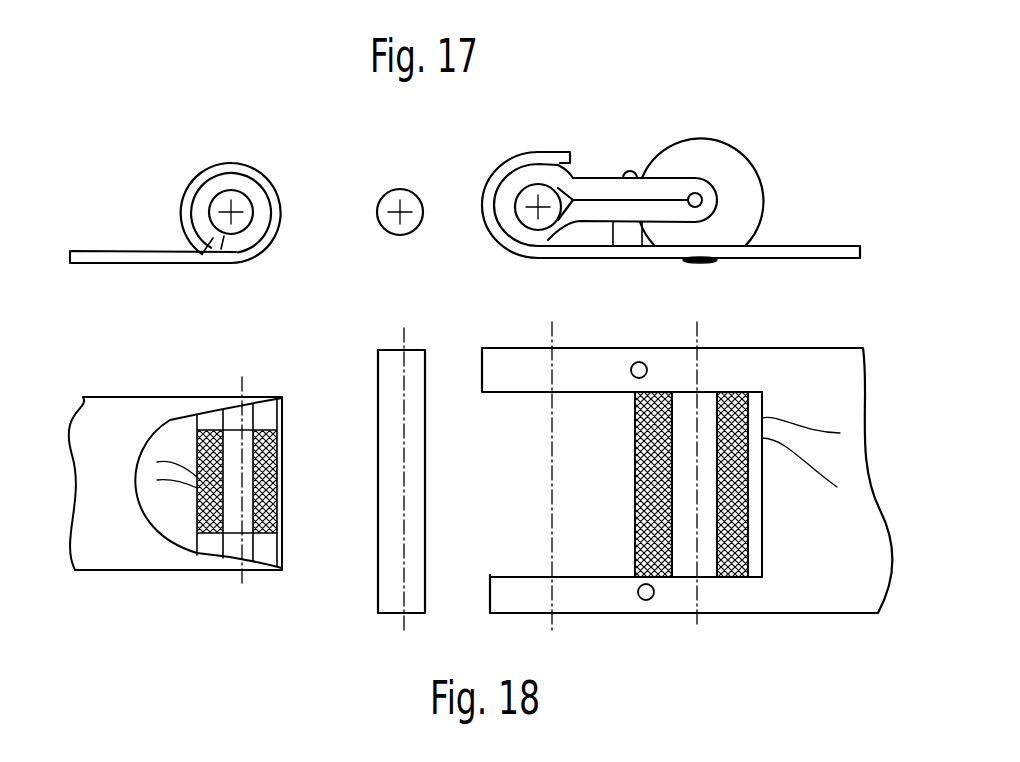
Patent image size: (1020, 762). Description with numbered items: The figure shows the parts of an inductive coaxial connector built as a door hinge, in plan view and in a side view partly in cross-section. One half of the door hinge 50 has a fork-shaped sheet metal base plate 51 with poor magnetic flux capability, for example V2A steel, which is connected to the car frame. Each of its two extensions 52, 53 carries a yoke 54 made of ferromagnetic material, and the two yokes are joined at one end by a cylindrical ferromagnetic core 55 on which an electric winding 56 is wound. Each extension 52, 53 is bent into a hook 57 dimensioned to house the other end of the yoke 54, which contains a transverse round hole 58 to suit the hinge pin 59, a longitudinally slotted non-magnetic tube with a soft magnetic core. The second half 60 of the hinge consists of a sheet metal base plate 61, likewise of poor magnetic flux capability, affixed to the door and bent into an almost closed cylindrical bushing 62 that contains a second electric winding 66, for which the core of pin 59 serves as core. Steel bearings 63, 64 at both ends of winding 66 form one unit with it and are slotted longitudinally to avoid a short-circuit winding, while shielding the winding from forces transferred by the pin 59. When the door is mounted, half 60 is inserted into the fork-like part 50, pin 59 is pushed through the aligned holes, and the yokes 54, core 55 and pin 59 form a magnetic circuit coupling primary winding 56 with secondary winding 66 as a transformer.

In FIG. 18, the door hinge half 50 is at (694, 477).
In FIG. 18, the sheet metal base plate 51 is at (820, 400).
In FIG. 17, the extension 52 is at (598, 255).
In FIG. 18, the extension 52 is at (594, 352).
In FIG. 18, the extension 53 is at (600, 597).
In FIG. 17, the yoke 54 is at (660, 190).
In FIG. 18, the cylindrical ferromagnetic core 55 is at (683, 493).
In FIG. 17, the electric winding 56 is at (740, 190).
In FIG. 18, the electric winding 56 is at (733, 577).
In FIG. 17, the hook 57 is at (537, 158).
In FIG. 17, the transverse round hole 58 is at (527, 217).
In FIG. 17, the hinge pin 59 is at (393, 198).
In FIG. 18, the hinge pin 59 is at (388, 593).
In FIG. 18, the second half of the hinge 60 is at (172, 388).
In FIG. 17, the sheet metal base plate 61 is at (106, 252).
In FIG. 18, the sheet metal base plate 61 is at (122, 550).
In FIG. 17, the cylindrical bushing 62 is at (258, 177).
In FIG. 18, the cylindrical bushing 62 is at (277, 460).
In FIG. 17, the steel bearing 63 is at (254, 232).
In FIG. 18, the steel bearing 63 is at (262, 420).
In FIG. 18, the steel bearing 64 is at (265, 548).
In FIG. 18, the electric winding 66 is at (277, 510).